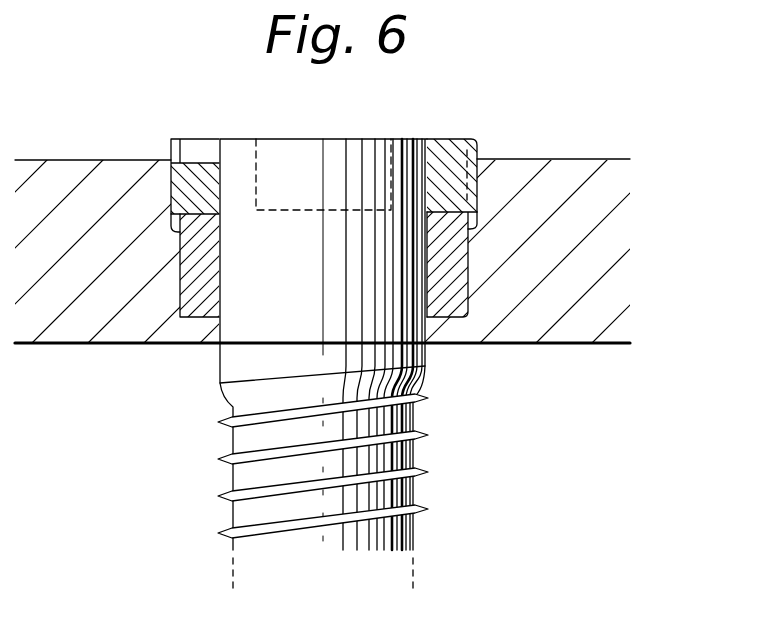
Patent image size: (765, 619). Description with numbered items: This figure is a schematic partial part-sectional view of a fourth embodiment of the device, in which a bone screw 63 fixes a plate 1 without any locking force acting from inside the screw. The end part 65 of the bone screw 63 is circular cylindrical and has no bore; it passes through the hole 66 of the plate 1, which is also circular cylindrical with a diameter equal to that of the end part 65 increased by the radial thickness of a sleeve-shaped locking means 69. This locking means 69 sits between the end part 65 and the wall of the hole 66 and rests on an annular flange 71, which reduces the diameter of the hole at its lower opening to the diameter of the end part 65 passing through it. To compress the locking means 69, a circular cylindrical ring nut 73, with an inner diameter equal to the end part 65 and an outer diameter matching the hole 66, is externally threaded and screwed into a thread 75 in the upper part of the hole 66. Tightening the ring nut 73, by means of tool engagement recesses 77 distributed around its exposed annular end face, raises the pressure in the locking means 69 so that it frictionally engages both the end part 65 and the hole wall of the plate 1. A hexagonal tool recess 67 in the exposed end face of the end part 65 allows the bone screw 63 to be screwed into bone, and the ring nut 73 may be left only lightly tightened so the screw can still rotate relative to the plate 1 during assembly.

The plate 1 is at (43, 185).
The bone screw 63 is at (289, 364).
The end part 65 is at (383, 300).
The hole 66 is at (470, 257).
The hexagonal tool recess 67 is at (256, 182).
The sleeve-shaped locking means 69 is at (453, 277).
The annular flange 71 is at (190, 330).
The ring nut 73 is at (458, 139).
The thread 75 is at (477, 217).
The tool engagement recess 77 is at (191, 150).